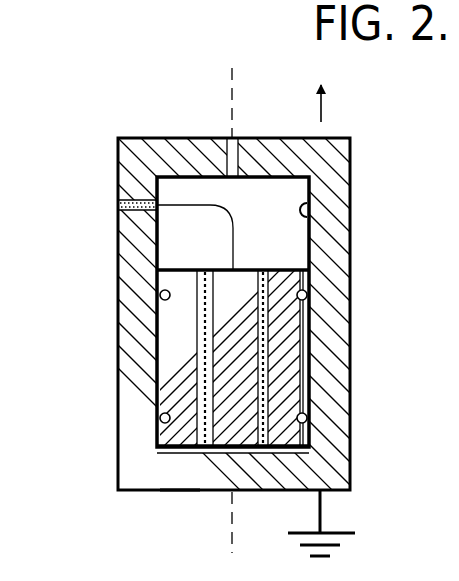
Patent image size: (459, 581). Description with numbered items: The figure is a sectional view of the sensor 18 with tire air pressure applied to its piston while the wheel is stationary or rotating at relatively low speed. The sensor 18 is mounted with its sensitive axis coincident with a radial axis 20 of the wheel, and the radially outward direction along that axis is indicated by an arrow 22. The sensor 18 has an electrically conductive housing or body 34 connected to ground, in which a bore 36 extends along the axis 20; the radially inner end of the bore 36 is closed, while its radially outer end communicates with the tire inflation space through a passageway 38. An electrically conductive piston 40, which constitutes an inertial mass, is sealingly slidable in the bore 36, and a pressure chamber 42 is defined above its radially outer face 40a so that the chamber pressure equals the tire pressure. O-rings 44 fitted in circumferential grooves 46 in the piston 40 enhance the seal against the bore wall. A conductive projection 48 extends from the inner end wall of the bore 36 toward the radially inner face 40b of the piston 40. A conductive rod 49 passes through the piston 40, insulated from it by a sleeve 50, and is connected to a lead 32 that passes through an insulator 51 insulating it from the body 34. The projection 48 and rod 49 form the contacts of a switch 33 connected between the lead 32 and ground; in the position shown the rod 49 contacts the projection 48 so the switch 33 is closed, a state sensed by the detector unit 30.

The sensor 18 is at (131, 117).
The radial axis 20 is at (233, 97).
The arrow 22 is at (323, 108).
The detector unit 30 is at (118, 205).
The lead 32 is at (119, 198).
The switch 33 is at (94, 381).
The housing or body 34 is at (343, 401).
The bore 36 is at (308, 208).
The passageway 38 is at (243, 138).
The piston 40 is at (279, 305).
The radially outer face 40a is at (302, 267).
The radially inner face 40b is at (320, 461).
The pressure chamber 42 is at (267, 215).
The O-rings 44 is at (308, 290).
The circumferential grooves 46 is at (306, 312).
The projection 48 is at (177, 491).
The rod 49 is at (214, 284).
The sleeve 50 is at (262, 270).
The insulator 51 is at (118, 212).